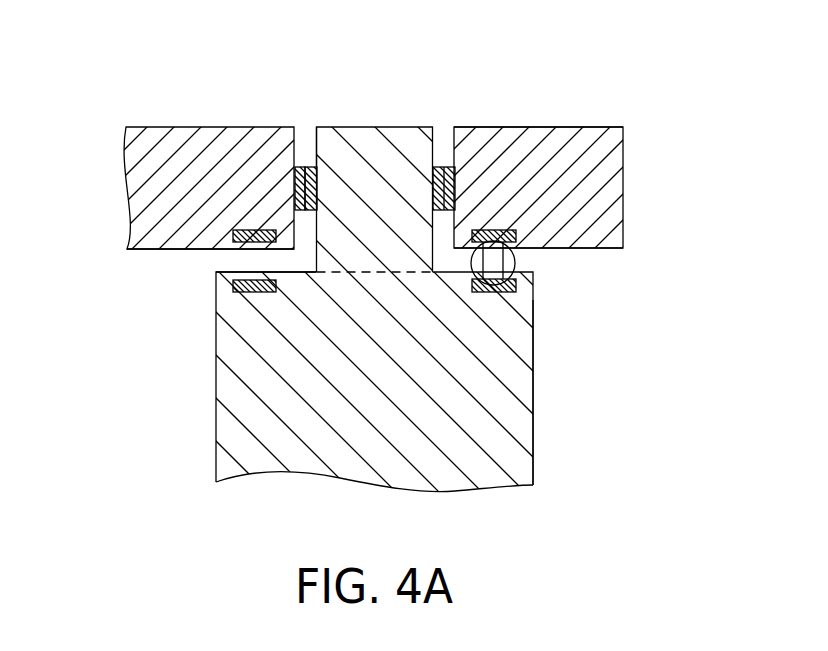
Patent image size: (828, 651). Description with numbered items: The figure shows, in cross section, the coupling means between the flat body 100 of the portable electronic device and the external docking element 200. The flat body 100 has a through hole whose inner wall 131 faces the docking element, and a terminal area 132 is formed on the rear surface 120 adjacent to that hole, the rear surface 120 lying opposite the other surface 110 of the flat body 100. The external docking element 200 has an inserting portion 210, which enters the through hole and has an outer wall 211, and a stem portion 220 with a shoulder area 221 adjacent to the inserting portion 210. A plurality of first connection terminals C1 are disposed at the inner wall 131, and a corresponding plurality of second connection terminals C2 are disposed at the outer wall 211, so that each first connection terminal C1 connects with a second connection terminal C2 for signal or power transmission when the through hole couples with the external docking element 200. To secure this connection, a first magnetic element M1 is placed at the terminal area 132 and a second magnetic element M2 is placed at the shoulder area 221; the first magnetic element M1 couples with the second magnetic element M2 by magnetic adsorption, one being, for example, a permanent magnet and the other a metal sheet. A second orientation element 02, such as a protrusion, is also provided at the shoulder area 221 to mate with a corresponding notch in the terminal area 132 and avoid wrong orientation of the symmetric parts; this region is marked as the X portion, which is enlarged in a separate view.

The flat body 100 is at (603, 162).
The upper surface of first substrate 110 is at (595, 118).
The rear surface 120 is at (606, 258).
The inner wall 131 is at (446, 123).
The terminal area 132 is at (248, 258).
The external docking element 200 is at (508, 365).
The inserting portion 210 is at (386, 145).
The outer wall 211 is at (308, 125).
The stem portion 220 is at (533, 430).
The shoulder area 221 is at (287, 258).
The first connection terminals C1 is at (296, 188).
The second connection terminals C2 is at (318, 173).
The first magnetic element M1 is at (235, 237).
The second magnetic element M2 is at (267, 293).
The second orientation element 02 is at (515, 229).
The X portion X is at (511, 258).